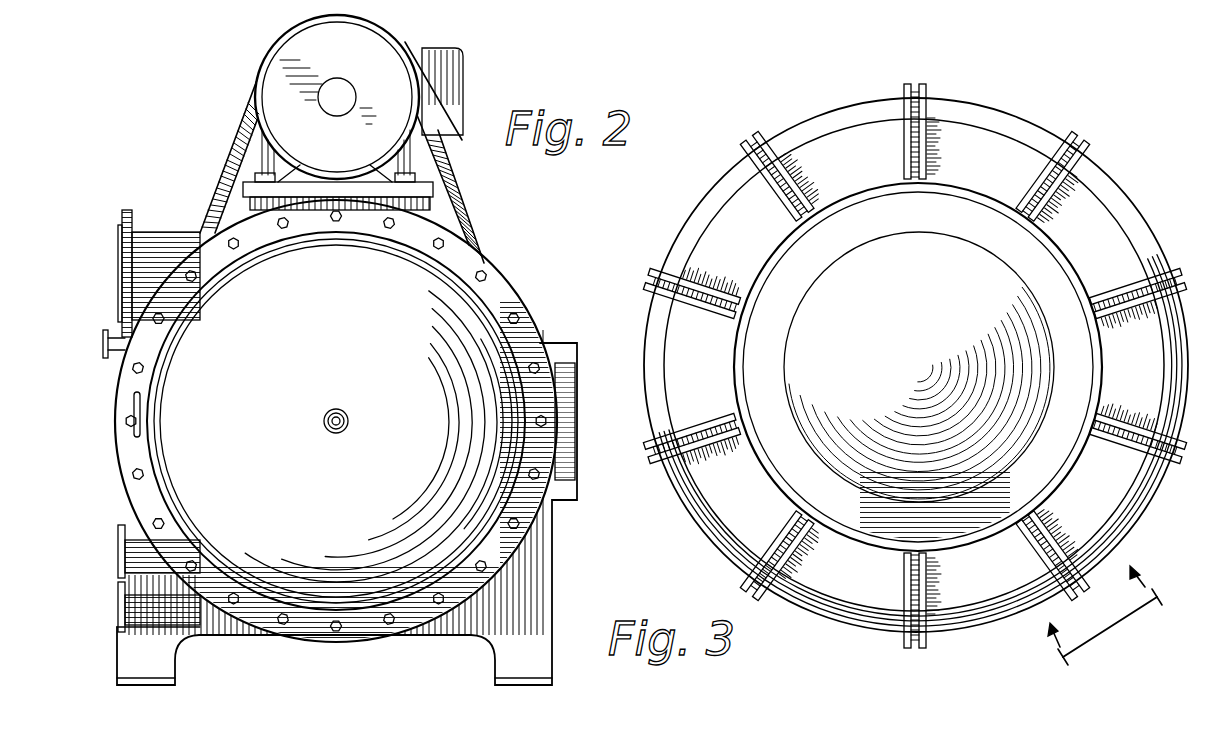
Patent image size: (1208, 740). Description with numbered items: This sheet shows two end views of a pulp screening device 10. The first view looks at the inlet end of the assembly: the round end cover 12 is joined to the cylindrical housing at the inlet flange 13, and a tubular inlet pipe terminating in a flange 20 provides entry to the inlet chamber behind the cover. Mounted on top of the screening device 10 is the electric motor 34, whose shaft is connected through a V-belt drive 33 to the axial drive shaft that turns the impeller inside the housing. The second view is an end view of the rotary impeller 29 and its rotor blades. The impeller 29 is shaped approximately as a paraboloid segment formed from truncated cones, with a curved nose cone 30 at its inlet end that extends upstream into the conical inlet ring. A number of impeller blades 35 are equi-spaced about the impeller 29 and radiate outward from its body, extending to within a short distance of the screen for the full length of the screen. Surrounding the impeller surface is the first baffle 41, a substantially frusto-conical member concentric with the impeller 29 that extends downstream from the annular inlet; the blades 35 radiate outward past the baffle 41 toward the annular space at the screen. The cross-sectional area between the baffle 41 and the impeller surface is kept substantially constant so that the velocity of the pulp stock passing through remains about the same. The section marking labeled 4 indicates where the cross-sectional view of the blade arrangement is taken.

In FIG. 2, the pulp screening device 10 is at (193, 226).
In FIG. 2, the end cover 12 is at (205, 447).
In FIG. 2, the inlet flange 13 is at (133, 400).
In FIG. 2, the flange 20 is at (129, 210).
In FIG. 2, the V-belt drive 33 is at (237, 152).
In FIG. 2, the electric motor 34 is at (277, 88).
In FIG. 3, the rotary impeller 29 is at (830, 240).
In FIG. 3, the nose cone 30 is at (965, 272).
In FIG. 3, the impeller blades 35 is at (1075, 132).
In FIG. 3, the first baffle 41 is at (1115, 235).
In FIG. 3, the section line 4- 4 is at (1112, 623).